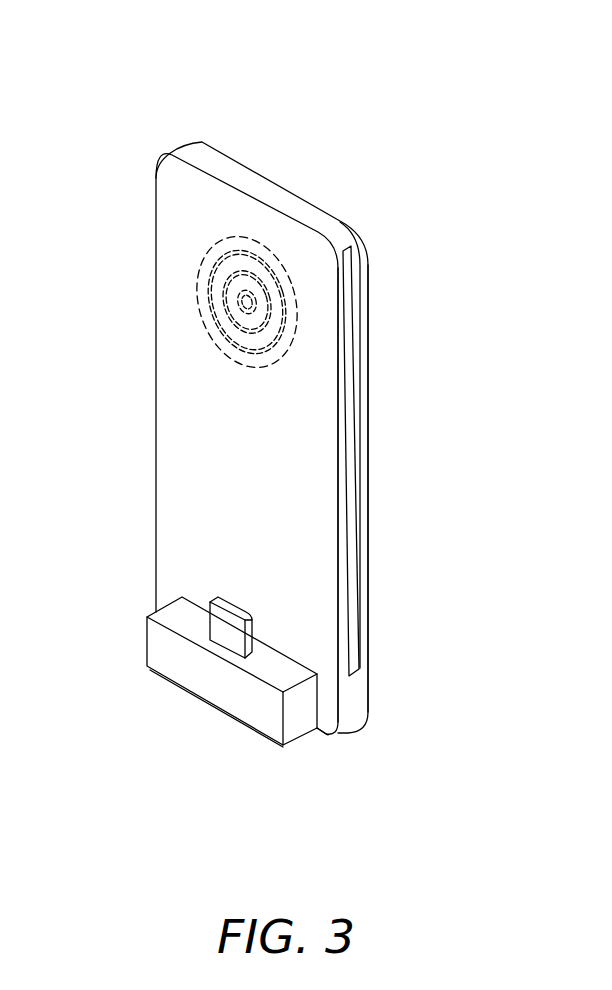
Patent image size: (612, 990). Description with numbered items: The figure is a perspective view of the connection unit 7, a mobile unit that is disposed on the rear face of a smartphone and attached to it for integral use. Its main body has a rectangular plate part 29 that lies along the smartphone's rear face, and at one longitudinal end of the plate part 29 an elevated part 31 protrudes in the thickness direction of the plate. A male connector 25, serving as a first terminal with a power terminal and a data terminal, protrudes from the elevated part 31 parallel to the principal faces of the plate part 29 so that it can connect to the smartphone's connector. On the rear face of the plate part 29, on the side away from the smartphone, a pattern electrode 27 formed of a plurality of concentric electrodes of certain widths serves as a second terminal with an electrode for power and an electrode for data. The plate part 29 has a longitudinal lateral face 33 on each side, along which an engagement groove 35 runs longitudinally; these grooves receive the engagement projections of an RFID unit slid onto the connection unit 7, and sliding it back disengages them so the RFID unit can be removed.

The connection unit 7 is at (272, 406).
The male connector 25 is at (232, 603).
The pattern electrode 27 is at (265, 370).
The plate part 29 is at (182, 378).
The elevated part 31 is at (233, 692).
The longitudinal lateral face 33 is at (362, 690).
The engagement groove 35 is at (357, 458).